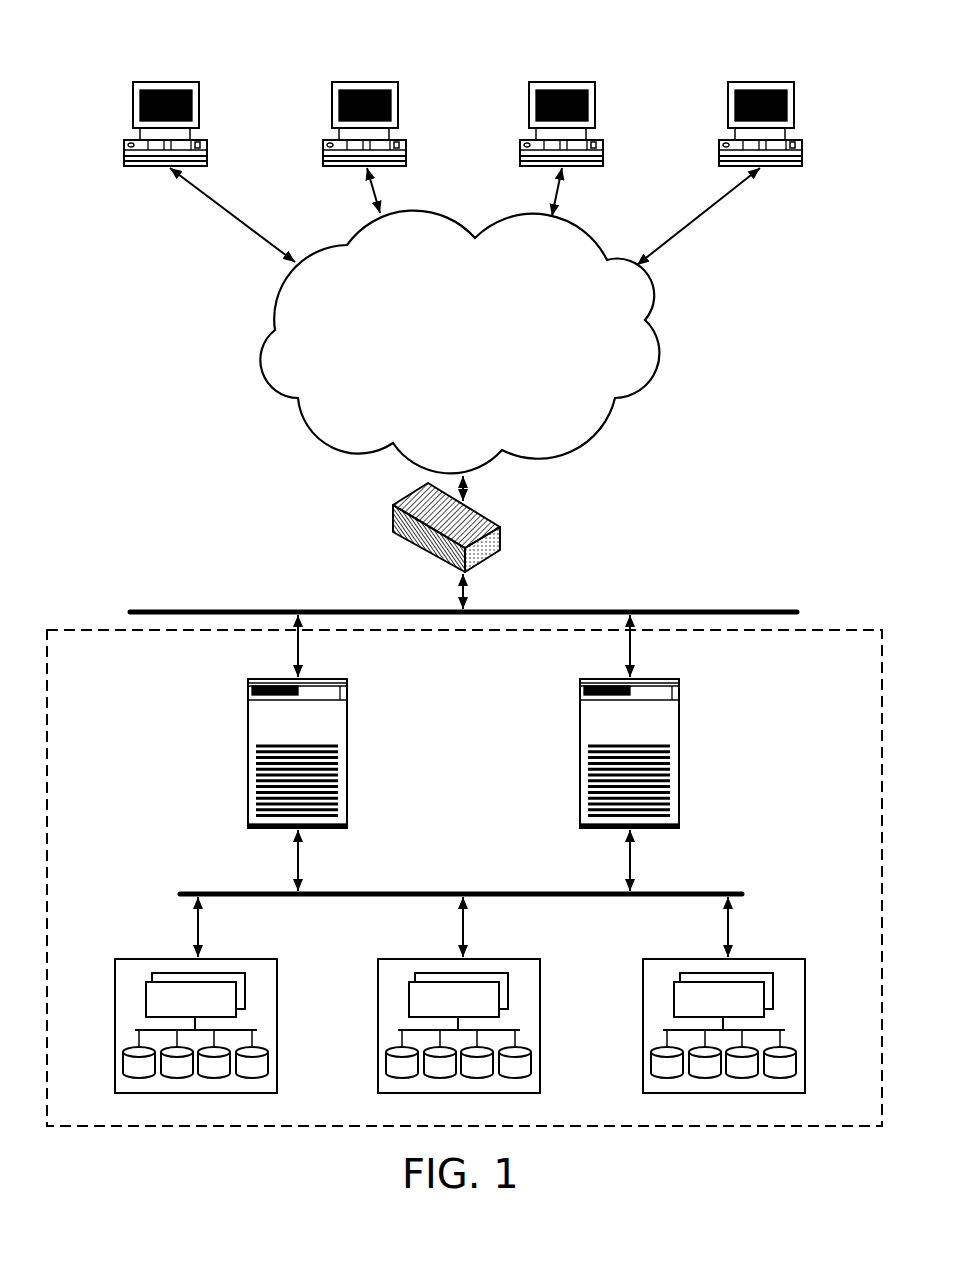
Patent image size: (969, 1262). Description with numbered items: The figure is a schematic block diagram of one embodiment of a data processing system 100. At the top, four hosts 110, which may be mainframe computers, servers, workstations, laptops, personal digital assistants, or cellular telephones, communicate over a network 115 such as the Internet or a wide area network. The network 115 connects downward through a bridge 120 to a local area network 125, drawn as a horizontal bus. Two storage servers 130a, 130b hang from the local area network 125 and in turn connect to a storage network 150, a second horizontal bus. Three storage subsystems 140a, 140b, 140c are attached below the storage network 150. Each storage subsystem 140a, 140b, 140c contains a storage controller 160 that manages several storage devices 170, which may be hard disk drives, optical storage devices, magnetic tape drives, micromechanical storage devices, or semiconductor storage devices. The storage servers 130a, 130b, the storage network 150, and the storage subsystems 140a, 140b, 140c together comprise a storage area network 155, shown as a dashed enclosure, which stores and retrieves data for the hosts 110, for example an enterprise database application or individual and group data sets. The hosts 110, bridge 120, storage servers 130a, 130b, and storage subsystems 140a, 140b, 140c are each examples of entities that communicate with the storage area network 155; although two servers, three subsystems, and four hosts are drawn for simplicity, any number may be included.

The data processing system 100 is at (130, 53).
The host 110 is at (199, 83).
The network 115 is at (459, 342).
The bridge 120 is at (502, 525).
The local area network (LAN) 125 is at (150, 610).
The storage server 130a is at (347, 679).
The storage server 130b is at (679, 679).
The storage subsystem 140a is at (277, 959).
The storage subsystem 140b is at (540, 959).
The storage subsystem 140c is at (805, 959).
The storage network 150 is at (395, 891).
The storage area network (SAN) 155 is at (847, 630).
The storage controller 160 is at (146, 1000).
The storage device 170 is at (123, 1062).